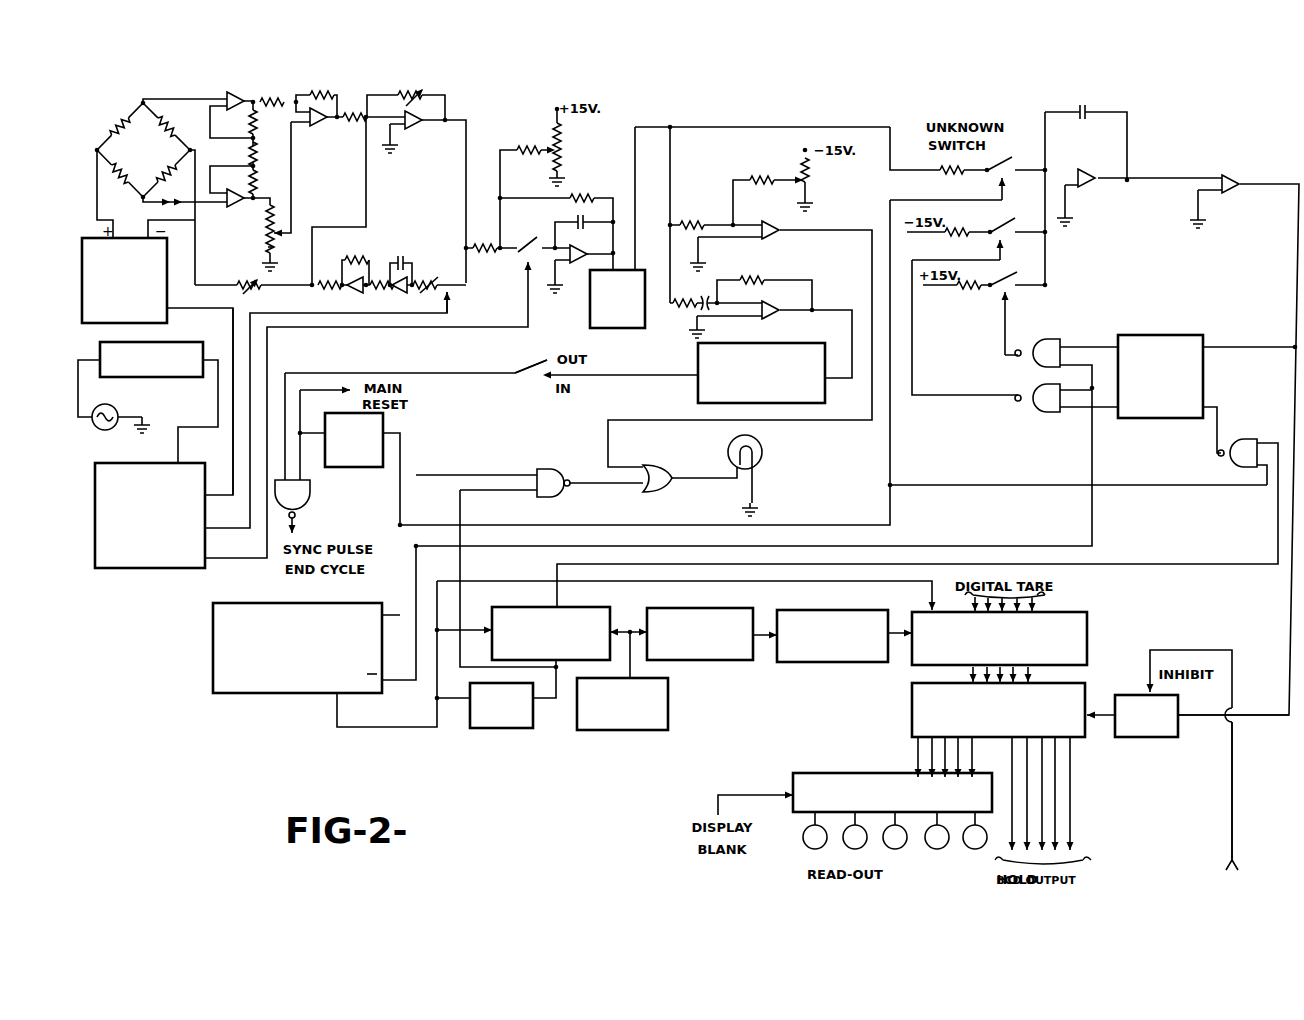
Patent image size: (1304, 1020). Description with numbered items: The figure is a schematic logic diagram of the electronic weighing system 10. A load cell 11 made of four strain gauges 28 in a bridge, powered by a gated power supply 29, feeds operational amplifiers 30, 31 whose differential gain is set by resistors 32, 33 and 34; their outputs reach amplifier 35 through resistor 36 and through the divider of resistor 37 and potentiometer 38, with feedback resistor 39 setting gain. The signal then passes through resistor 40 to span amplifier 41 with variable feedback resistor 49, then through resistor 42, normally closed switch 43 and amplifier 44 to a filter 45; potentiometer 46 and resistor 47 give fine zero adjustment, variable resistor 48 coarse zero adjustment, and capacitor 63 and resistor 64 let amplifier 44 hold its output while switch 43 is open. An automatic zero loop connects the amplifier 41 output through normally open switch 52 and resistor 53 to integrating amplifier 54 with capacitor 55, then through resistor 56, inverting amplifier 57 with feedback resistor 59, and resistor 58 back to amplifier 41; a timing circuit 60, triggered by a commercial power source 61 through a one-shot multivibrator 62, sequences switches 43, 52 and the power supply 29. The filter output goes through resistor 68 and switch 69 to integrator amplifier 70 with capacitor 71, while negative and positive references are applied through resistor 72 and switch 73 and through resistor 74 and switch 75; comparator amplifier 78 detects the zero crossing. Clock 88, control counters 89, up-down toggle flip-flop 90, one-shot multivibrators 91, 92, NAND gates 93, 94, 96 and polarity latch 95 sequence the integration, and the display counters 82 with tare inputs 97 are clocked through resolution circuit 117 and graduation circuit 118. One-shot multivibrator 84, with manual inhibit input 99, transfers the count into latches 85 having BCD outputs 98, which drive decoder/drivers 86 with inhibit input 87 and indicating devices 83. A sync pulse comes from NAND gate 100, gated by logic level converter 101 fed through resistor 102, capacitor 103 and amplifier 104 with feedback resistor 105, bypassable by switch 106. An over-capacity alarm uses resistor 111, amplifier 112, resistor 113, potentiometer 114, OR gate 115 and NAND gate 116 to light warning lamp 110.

The electronic weighing system 10 is at (298, 753).
The load cell 11 is at (127, 97).
The strain gauges 28 is at (159, 184).
The gated power supply 29 is at (167, 307).
The operational amplifier 30 is at (229, 208).
The operational amplifier 31 is at (234, 94).
The resistor 32 is at (258, 180).
The resistor 33 is at (258, 126).
The resistor 34 is at (258, 153).
The amplifier 35 is at (313, 139).
The resistor 36 is at (276, 96).
The resistor 37 is at (265, 214).
The potentiometer 38 is at (266, 247).
The feedback resistor 39 is at (324, 89).
The resistor 40 is at (352, 123).
The operational amplifier 41 is at (420, 127).
The resistor 42 is at (493, 245).
The normally closed switch 43 is at (516, 257).
The amplifier 44 is at (576, 268).
The filter 45 is at (590, 318).
The potentiometer 46 is at (563, 150).
The resistor 47 is at (520, 147).
The variable resistor 48 is at (240, 283).
The variable feedback resistor 49 is at (402, 90).
The normally open switch 52 is at (452, 295).
The resistor 53 is at (440, 280).
The operational amplifier 54 is at (398, 297).
The capacitor 55 is at (398, 256).
The resistor 56 is at (384, 292).
The inverting amplifier 57 is at (351, 293).
The resistor 58 is at (319, 293).
The feedback resistor 59 is at (350, 261).
The timing circuit 60 is at (182, 570).
The commercial power source 61 is at (120, 409).
The one-shot multivibrator 62 is at (172, 378).
The capacitor 63 is at (574, 218).
The resistor 64 is at (580, 195).
The resistor 68 is at (938, 174).
The normally open switch 69 is at (990, 176).
The operational amplifier 70 is at (1090, 188).
The capacitor 71 is at (1080, 122).
The resistor 72 is at (952, 240).
The normally open switch 73 is at (1010, 238).
The resistor 74 is at (969, 296).
The normally open switch 75 is at (1013, 290).
The amplifier 78 is at (1234, 193).
The display counters 82 is at (1088, 622).
The indicating devices 83 is at (976, 852).
The one-shot multivibrator 84 is at (1150, 739).
The latches 85 is at (910, 710).
The decoder/drivers 86 is at (840, 772).
The inhibit input 87 is at (752, 792).
The clock 88 is at (632, 731).
The control counters 89 is at (577, 604).
The up-down toggle flip-flop 90 is at (315, 695).
The one-shot multivibrator 91 is at (352, 469).
The one-shot multivibrator 92 is at (505, 730).
The NAND gate 93 is at (1023, 414).
The NAND gate 94 is at (1044, 343).
The polarity latch 95 is at (1158, 420).
The NAND gate 96 is at (1222, 468).
The tare inputs 97 is at (1029, 593).
The BCD outputs 98 is at (1064, 816).
The manual inhibit input 99 is at (1233, 790).
The NAND gate 100 is at (310, 503).
The logic level converter 101 is at (826, 396).
The resistor 102 is at (688, 306).
The capacitor 103 is at (708, 298).
The amplifier 104 is at (778, 318).
The feedback resistor 105 is at (770, 275).
The switch 106 is at (523, 381).
The warning lamp 110 is at (760, 458).
The resistor 111 is at (704, 220).
The amplifier 112 is at (782, 230).
The resistor 113 is at (758, 178).
The potentiometer 114 is at (810, 188).
The OR gate 115 is at (659, 462).
The NAND gate 116 is at (544, 465).
The resolution circuit 117 is at (710, 662).
The graduation circuit 118 is at (816, 664).